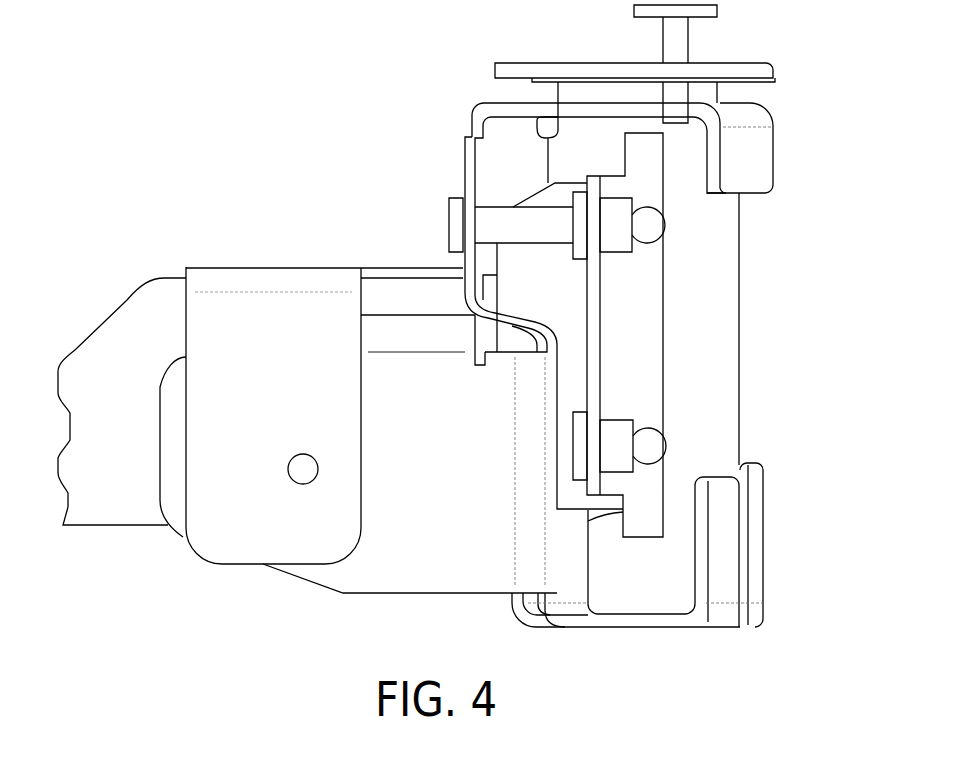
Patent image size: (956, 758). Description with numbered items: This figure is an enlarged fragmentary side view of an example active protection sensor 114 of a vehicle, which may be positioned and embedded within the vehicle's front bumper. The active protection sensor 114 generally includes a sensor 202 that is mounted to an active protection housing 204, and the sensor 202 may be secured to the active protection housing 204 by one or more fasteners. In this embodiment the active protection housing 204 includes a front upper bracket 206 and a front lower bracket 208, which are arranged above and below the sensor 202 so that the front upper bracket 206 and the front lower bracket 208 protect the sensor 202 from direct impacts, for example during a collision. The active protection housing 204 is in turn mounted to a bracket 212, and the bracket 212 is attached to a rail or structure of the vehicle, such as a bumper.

The active protection sensor 114 is at (270, 90).
The active protection housing 204 is at (474, 103).
The sensor 202 is at (722, 314).
The bracket 212 is at (747, 63).
The front upper bracket 206 is at (753, 163).
The front lower bracket 208 is at (755, 545).